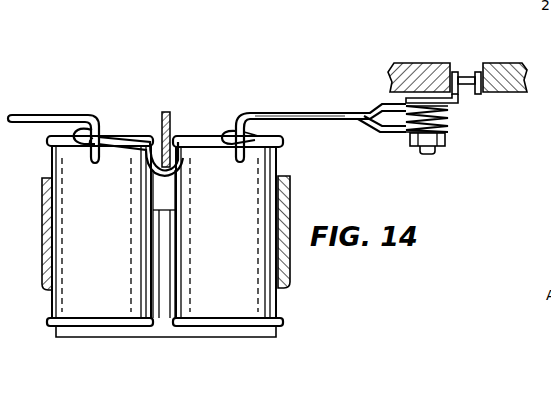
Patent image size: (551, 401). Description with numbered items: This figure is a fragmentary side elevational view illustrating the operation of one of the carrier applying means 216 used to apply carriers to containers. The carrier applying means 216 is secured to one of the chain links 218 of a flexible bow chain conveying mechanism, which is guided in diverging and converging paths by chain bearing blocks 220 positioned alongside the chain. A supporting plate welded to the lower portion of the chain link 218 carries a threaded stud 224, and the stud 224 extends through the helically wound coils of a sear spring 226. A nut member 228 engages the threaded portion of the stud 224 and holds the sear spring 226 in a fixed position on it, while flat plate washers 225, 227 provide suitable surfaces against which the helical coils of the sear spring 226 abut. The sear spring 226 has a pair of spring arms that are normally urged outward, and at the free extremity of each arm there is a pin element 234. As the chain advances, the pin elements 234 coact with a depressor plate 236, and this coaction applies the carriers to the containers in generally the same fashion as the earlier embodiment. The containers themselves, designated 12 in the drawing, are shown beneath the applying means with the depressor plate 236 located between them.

The battery cells 12 is at (202, 302).
The carrier applying means 216 is at (264, 106).
The chain link 218 is at (468, 76).
The chain bearing block 220 is at (428, 70).
The threaded stud 224 is at (440, 120).
The flat plate washer 225 is at (444, 100).
The sear spring 226 is at (298, 121).
The flat plate washer 227 is at (447, 135).
The nut member 228 is at (413, 149).
The pin element 234 is at (100, 131).
The depressor plate 236 is at (180, 103).